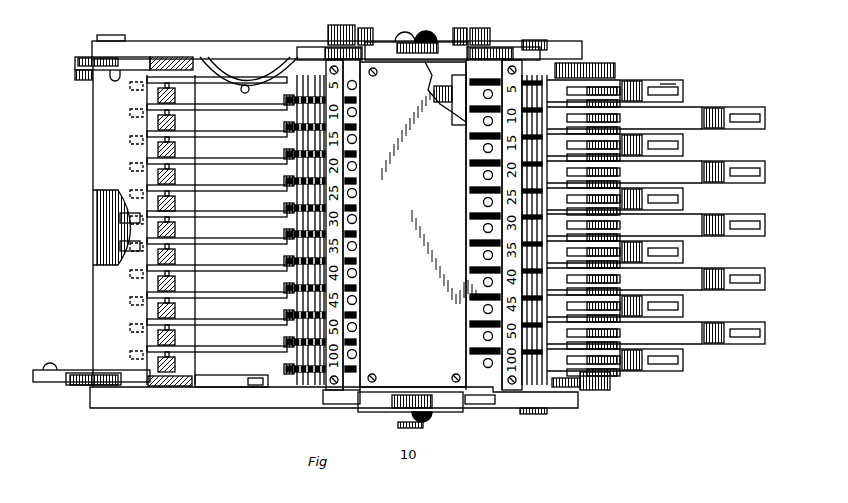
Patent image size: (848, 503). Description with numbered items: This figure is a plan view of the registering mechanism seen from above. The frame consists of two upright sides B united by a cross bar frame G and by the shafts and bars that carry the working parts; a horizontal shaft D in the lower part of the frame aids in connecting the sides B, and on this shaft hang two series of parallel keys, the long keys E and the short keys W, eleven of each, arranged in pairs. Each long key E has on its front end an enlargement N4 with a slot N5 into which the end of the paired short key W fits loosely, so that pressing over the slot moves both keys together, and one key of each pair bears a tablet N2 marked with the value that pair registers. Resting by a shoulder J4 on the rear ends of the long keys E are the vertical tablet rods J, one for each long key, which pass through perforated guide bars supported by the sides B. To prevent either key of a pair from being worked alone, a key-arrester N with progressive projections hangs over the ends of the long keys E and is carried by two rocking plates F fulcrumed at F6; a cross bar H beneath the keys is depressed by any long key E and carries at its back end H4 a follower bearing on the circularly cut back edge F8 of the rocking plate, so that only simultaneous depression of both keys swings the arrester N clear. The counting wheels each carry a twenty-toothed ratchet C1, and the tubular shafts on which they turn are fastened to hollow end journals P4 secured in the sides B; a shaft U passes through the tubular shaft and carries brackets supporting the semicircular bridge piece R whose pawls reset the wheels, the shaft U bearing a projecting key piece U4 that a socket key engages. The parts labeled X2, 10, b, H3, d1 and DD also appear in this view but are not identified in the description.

The upright sides B is at (203, 41).
The key-arrester N is at (98, 140).
The bracket X2 is at (97, 230).
The long keys E is at (692, 265).
The tablet rods J is at (177, 177).
The shoulder J4 is at (172, 220).
The bridge piece R is at (288, 238).
The ratchet C1 is at (290, 290).
The enlargement N4 is at (690, 92).
The tablet N2 is at (650, 84).
The short keys W is at (628, 90).
The slot N5 is at (676, 84).
The cross bar H is at (603, 66).
The rocking plates F is at (104, 72).
The fulcrum F6 is at (107, 54).
The flange 10 is at (78, 76).
The cross bar frame G is at (172, 57).
The cam b is at (236, 62).
The back end of cross bar H4 is at (33, 372).
The back edge of rocking plate F8 is at (72, 385).
The plate H3 is at (257, 388).
The hollow end journals P4 is at (330, 47).
The shaft U is at (414, 27).
The key piece U4 is at (417, 26).
The block d1 is at (383, 46).
The disc DD is at (446, 430).
The shaft D is at (547, 44).